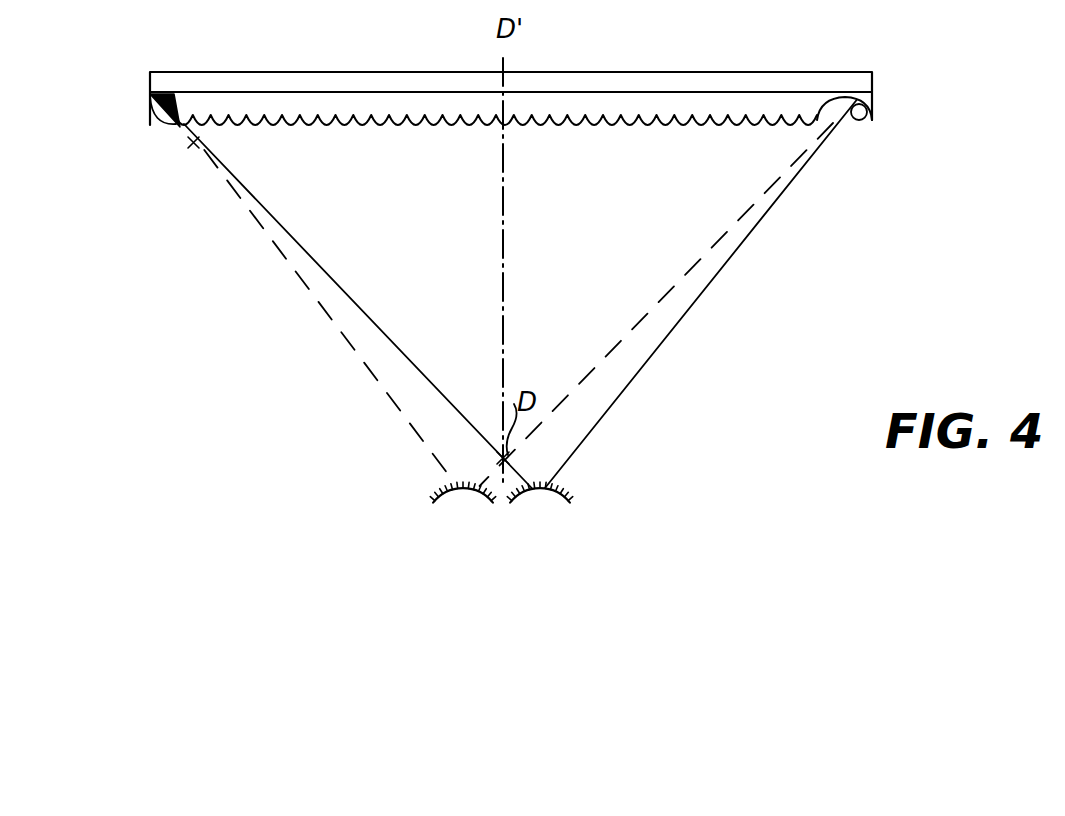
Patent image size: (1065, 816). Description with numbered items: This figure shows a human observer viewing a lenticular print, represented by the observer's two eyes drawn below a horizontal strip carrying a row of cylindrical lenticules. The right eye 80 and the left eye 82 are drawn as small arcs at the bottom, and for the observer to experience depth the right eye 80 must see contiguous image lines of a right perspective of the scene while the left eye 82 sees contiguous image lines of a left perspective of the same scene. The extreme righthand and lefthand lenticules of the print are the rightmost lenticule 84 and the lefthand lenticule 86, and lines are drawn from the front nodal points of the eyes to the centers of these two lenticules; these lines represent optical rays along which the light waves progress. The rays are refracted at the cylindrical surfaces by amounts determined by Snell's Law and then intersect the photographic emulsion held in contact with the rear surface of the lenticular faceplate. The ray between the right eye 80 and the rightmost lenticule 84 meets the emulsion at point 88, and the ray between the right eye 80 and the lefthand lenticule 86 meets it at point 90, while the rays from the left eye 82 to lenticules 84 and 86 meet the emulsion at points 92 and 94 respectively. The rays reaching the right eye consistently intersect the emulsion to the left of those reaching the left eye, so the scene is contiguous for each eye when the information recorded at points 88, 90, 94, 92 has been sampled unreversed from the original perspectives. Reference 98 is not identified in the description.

The right eye 80 is at (573, 501).
The left eye 82 is at (437, 497).
The rightmost lenticule 84 is at (851, 130).
The lefthand lenticule 86 is at (192, 142).
The emulsion intersection point 88 is at (815, 124).
The emulsion intersection point 90 is at (157, 100).
The emulsion intersection point 92 is at (173, 98).
The emulsion intersection point 94 is at (873, 118).
The document illumination strip 98 is at (820, 72).